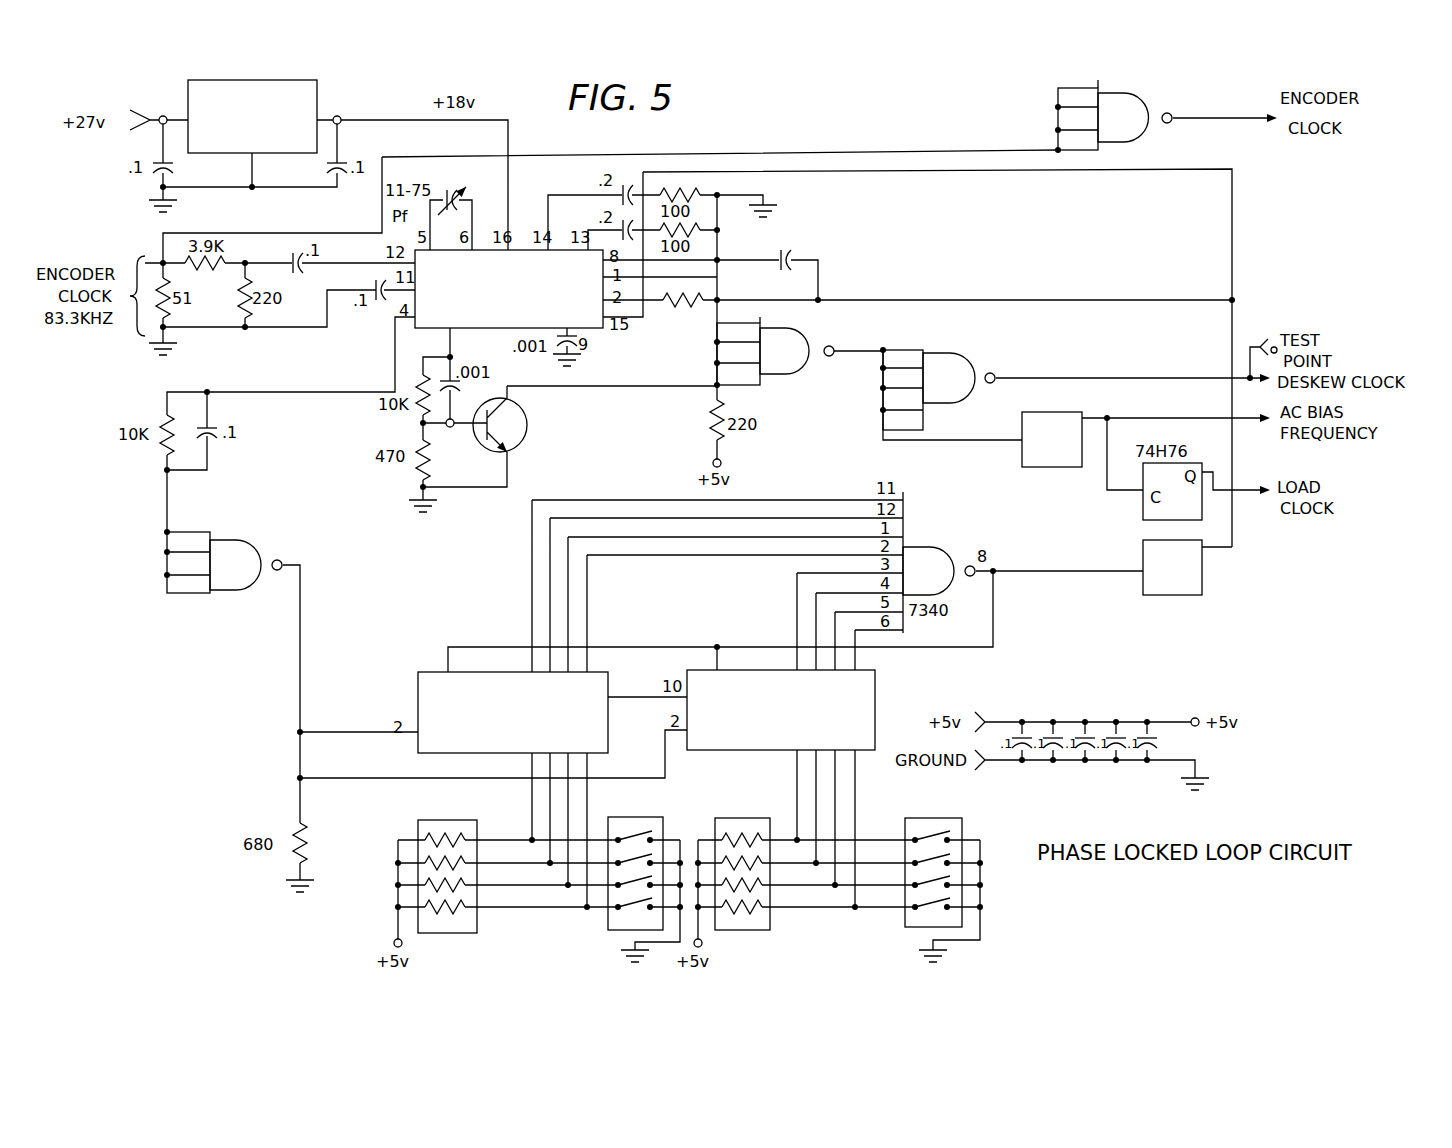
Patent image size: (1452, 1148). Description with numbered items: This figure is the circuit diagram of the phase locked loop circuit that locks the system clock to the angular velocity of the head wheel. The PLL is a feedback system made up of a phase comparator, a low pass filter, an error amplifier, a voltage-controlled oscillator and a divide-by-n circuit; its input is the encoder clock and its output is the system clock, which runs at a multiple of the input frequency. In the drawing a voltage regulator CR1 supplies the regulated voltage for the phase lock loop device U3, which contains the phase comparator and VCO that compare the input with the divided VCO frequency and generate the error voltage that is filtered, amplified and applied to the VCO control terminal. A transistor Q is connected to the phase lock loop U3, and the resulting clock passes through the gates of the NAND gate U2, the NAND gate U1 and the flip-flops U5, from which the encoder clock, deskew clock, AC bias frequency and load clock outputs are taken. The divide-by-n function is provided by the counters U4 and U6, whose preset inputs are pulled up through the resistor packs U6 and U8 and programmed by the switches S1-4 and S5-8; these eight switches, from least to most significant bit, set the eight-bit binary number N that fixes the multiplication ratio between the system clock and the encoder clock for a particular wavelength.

The voltage regulator LM342-18 CR1 is at (252, 116).
The phase lock loop NE526B U3 is at (509, 289).
The transistor 2N3904 Q is at (508, 436).
The NAND gate 7413 U2 is at (509, 457).
The NAND gate 74S140 U1 is at (1037, 249).
The flip-flop 74H76 U5 is at (1120, 505).
The counter 74161 U4 is at (513, 714).
The counter 74161 / 1K resistor pack U6 is at (645, 792).
The 1K resistor pack U8 is at (741, 864).
The switches S1-4 is at (635, 862).
The switches S5-8 is at (933, 861).